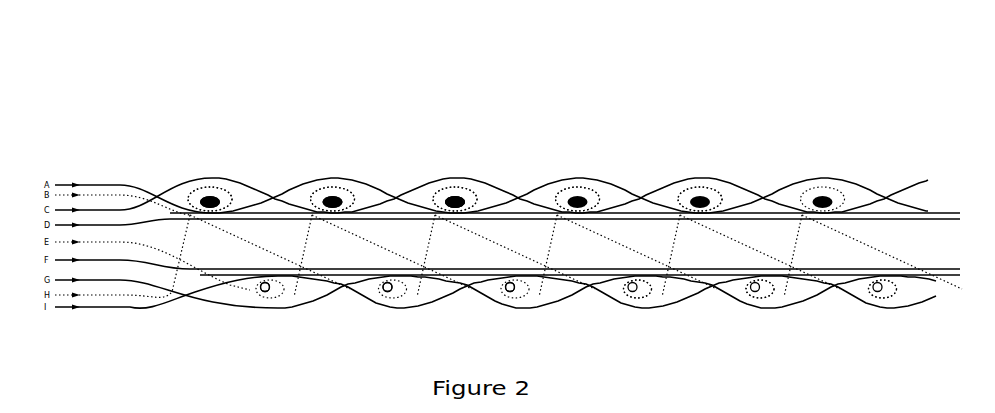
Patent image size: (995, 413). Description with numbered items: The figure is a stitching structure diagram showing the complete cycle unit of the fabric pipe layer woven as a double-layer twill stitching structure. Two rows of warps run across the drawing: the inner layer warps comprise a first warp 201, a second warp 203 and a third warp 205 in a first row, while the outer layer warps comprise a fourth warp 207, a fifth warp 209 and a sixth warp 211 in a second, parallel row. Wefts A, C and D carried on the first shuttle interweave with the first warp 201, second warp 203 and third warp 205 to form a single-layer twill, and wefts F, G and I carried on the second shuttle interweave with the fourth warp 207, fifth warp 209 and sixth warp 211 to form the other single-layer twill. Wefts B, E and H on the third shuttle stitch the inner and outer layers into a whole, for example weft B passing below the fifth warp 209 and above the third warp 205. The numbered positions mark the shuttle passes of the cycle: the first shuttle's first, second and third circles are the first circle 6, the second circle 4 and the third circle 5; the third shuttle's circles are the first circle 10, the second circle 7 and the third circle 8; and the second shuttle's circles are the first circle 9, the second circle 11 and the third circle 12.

The twill weaving's first shuttle and second circle 4 is at (200, 180).
The twill weaving's first shuttle and third circle 5 is at (313, 184).
The twill weaving's first shuttle and first circle 6 is at (428, 184).
The twill weaving's third shuttle and second circle 7 is at (468, 184).
The twill weaving's third shuttle and third circle 8 is at (587, 182).
The twill weaving's second shuttle and first circle 9 is at (605, 289).
The twill weaving's third shuttle and first circle 10 is at (702, 181).
The twill weaving's second shuttle and second circle 11 is at (768, 299).
The twill weaving's second shuttle and third circle 12 is at (848, 286).
The first warp 201 is at (214, 197).
The second warp 203 is at (336, 197).
The third warp 205 is at (457, 193).
The fourth warp 207 is at (267, 293).
The fifth warp 209 is at (388, 291).
The sixth warp 211 is at (507, 291).